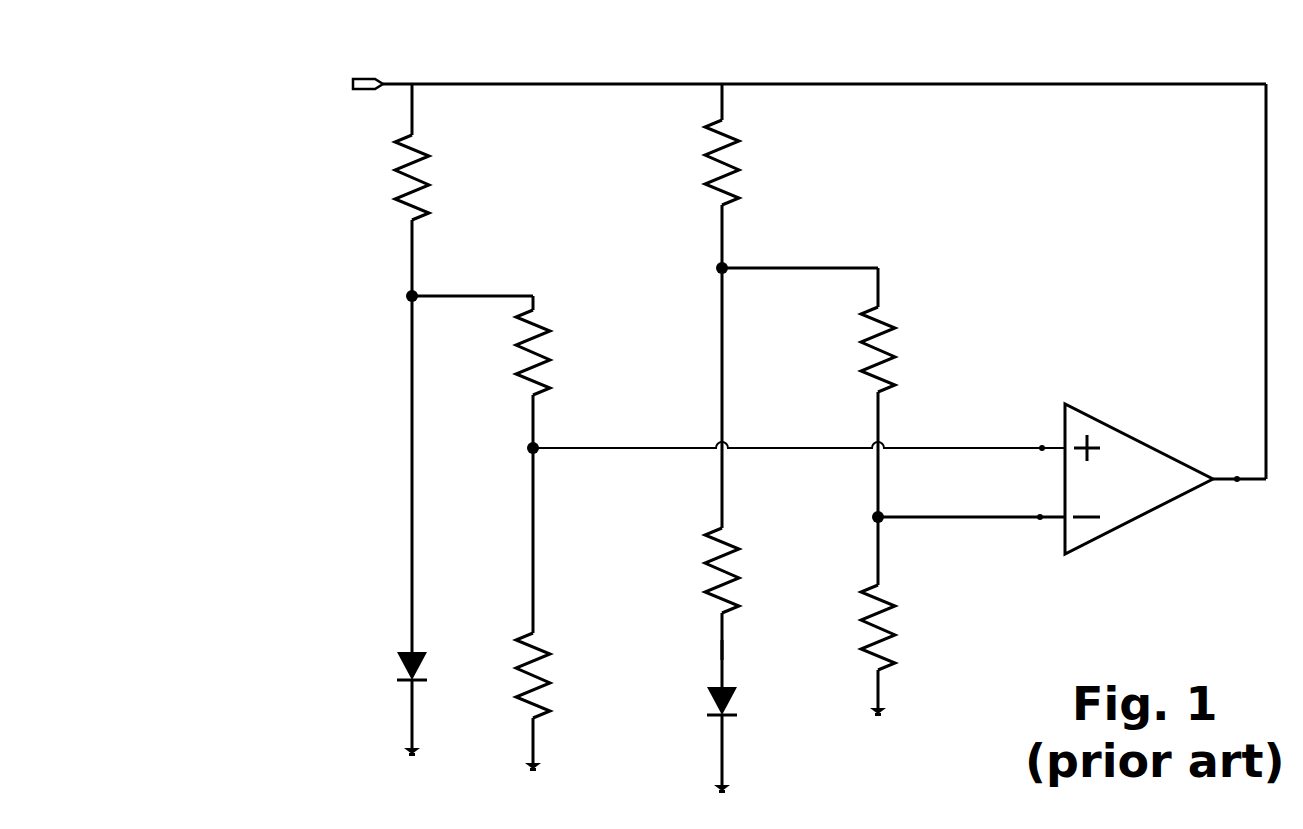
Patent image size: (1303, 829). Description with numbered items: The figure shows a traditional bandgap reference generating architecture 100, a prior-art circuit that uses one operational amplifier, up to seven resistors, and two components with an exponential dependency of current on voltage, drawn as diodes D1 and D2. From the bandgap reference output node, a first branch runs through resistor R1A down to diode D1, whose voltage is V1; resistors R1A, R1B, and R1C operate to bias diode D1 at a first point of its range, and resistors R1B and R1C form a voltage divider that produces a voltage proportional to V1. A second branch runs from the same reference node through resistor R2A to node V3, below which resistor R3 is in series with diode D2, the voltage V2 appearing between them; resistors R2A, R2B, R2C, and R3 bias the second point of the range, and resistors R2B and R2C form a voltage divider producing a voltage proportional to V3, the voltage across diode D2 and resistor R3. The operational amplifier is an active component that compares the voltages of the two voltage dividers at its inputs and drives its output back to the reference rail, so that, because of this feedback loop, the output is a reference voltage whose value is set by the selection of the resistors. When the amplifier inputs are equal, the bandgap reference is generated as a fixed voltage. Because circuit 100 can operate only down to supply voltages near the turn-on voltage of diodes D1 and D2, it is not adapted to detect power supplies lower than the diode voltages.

The bandgap reference generating architecture 100 is at (188, 94).
The resistor R1A is at (378, 177).
The resistor R1B is at (567, 352).
The resistor R1C is at (573, 675).
The resistor R2A is at (763, 162).
The resistor R2B is at (908, 349).
The resistor R2C is at (919, 627).
The resistor R3 is at (747, 570).
The diode D1 is at (387, 664).
The diode D2 is at (703, 703).
The voltage across diode D1 V1 is at (397, 298).
The node voltage V2 is at (743, 644).
The voltage across diode D2 and resistor R3 V3 is at (705, 269).